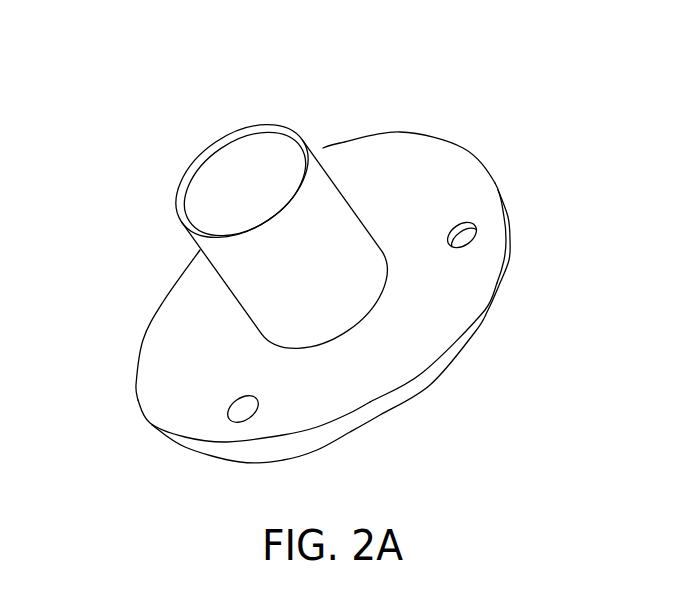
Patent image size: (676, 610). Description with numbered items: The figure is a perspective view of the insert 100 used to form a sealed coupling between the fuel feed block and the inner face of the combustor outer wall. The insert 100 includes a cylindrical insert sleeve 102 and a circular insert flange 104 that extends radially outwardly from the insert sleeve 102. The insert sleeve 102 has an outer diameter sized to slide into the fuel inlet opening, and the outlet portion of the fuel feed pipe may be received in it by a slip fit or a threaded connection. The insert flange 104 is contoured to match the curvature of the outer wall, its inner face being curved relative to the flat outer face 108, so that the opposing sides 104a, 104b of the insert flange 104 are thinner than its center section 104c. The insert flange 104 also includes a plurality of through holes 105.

The insert 100 is at (319, 284).
The insert sleeve 102 is at (312, 132).
The insert flange 104 is at (319, 305).
The opposing side of insert flange 104a is at (485, 310).
The opposing side of insert flange 104b is at (163, 302).
The center section of insert flange 104c is at (447, 138).
The through holes 105 is at (478, 230).
The outer face of insert flange 108 is at (388, 333).